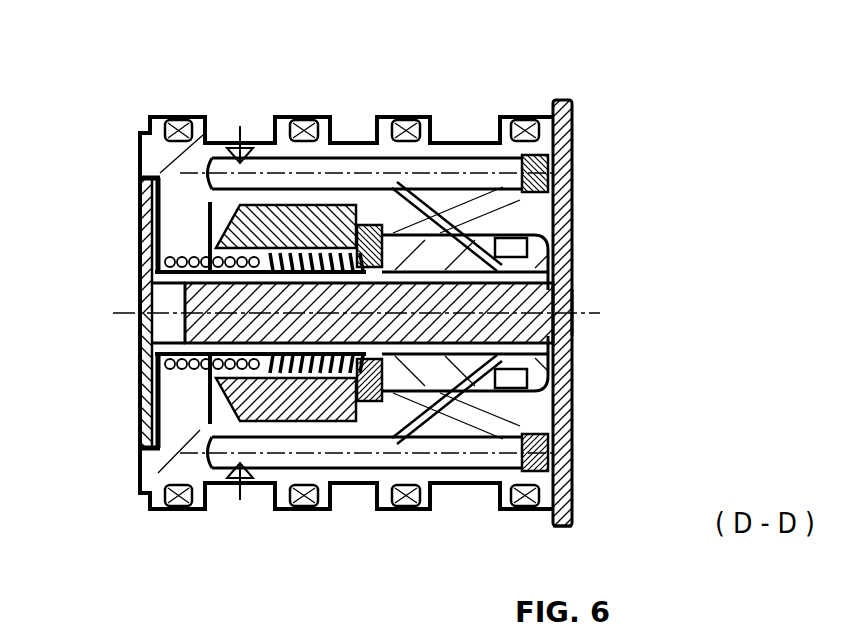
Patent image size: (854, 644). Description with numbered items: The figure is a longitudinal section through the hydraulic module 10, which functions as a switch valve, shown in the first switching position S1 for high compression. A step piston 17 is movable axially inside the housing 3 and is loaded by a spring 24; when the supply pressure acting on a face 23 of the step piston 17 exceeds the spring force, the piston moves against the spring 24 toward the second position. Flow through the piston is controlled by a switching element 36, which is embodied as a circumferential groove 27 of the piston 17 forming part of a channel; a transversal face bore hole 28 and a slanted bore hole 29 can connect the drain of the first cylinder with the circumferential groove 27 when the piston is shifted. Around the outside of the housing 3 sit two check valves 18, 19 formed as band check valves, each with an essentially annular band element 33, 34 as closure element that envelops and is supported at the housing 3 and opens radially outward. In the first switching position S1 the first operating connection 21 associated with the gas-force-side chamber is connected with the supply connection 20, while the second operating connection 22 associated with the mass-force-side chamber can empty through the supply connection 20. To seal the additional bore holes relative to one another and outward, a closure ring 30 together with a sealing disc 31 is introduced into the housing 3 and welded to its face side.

The housing 3 is at (122, 157).
The hydraulic module 10 is at (712, 178).
The step piston 17 is at (186, 223).
The check valve 18 is at (274, 254).
The band element 33 is at (252, 122).
The check valve 19 is at (487, 246).
The band element 34 is at (465, 313).
The supply connection 20 is at (333, 497).
The first operating connection 21 is at (211, 508).
The second operating connection 22 is at (433, 497).
The face 23 is at (362, 492).
The spring 24 is at (180, 368).
The circumferential groove 27 is at (587, 267).
The switching element 36 is at (510, 250).
The transversal face bore hole 28 is at (345, 150).
The slanted bore hole 29 is at (440, 143).
The closure ring 30 is at (573, 452).
The sealing disc 31 is at (573, 478).
The first switching position S1 is at (692, 289).